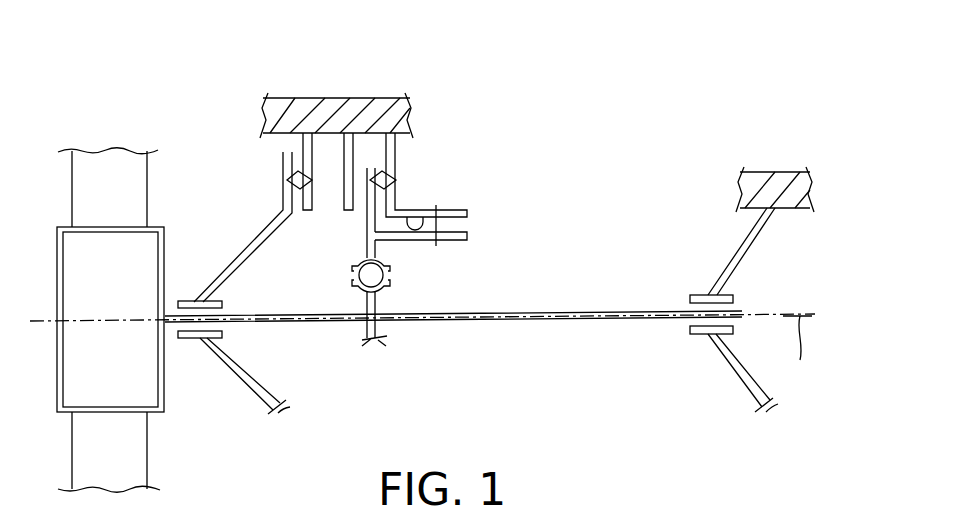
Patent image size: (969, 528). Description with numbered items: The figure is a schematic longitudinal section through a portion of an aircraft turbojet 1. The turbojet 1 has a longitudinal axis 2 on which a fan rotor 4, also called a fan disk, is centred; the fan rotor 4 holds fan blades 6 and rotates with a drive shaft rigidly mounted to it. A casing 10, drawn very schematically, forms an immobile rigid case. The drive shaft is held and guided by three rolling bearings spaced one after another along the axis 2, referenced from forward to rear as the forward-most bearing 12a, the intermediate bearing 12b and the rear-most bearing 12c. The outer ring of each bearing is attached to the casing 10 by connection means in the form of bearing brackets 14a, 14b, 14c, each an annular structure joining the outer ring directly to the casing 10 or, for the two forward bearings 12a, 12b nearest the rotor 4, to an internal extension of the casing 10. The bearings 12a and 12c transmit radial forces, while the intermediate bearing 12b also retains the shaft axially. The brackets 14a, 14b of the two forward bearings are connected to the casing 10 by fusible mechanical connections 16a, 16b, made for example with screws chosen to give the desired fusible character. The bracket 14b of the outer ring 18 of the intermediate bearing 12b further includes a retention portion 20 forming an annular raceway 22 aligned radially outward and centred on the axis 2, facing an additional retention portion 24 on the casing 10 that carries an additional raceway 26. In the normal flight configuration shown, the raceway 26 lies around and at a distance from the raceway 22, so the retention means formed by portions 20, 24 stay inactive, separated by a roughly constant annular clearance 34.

The turbojet 1 is at (186, 98).
The longitudinal axis 2 is at (488, 348).
The fan rotor 4 is at (152, 380).
The fan blades 6 is at (133, 175).
The casing 10 is at (345, 105).
The forward-most rolling bearing 12a is at (194, 300).
The intermediate rolling bearing 12b is at (386, 298).
The rear-most rolling bearing 12c is at (698, 293).
The bearing bracket 14a is at (245, 262).
The bearing bracket 14b is at (368, 249).
The bearing bracket 14c is at (745, 255).
The fusible mechanical connection 16a is at (285, 176).
The fusible mechanical connection 16b is at (394, 175).
The outer ring 18 is at (362, 268).
The retention portion 20 is at (455, 246).
The annular raceway 22 is at (468, 236).
The additional retention portion 24 is at (456, 211).
The additional raceway 26 is at (412, 215).
The annular clearance 34 is at (436, 240).